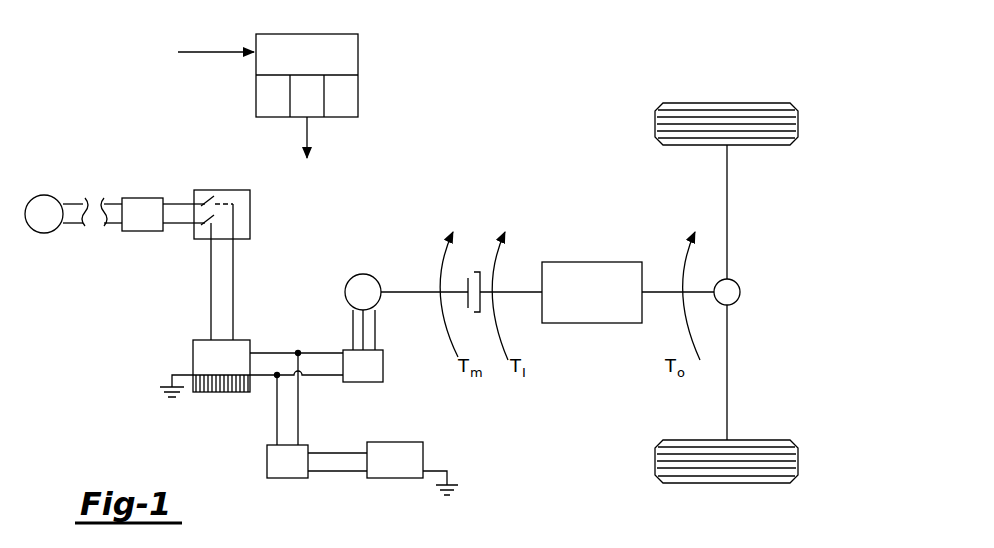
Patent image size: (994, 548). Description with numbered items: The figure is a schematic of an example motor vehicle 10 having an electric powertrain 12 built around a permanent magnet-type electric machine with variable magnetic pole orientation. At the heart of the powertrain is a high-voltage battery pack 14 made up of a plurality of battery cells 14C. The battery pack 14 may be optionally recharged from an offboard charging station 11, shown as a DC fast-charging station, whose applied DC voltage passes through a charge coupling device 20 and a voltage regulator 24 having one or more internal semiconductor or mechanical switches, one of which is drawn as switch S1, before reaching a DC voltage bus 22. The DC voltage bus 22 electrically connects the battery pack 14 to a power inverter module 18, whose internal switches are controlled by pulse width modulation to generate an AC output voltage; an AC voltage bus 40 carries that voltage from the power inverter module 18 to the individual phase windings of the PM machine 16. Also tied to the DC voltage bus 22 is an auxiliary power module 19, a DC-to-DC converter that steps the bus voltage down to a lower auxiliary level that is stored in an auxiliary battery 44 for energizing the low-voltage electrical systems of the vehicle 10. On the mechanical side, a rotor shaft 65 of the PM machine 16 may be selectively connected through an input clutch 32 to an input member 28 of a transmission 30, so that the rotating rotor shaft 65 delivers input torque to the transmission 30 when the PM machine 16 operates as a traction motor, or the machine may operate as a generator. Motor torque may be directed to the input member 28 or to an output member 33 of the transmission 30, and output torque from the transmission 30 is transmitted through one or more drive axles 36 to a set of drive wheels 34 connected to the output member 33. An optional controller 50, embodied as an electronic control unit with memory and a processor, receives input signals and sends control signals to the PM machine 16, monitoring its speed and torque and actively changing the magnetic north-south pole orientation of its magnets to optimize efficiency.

The motor vehicle 10 is at (810, 72).
The offboard charging station 11 is at (44, 195).
The electric powertrain 12 is at (422, 195).
The high-voltage battery pack 14 is at (250, 345).
The battery cells 14C is at (222, 395).
The PM machine 16 is at (363, 274).
The power inverter module 18 is at (383, 365).
The auxiliary power module 19 is at (283, 478).
The charge coupling device 20 is at (143, 198).
The DC voltage bus 22 is at (233, 290).
The voltage regulator 24 is at (222, 190).
The switch S1 is at (196, 188).
The input member 28 is at (521, 290).
The transmission 30 is at (591, 262).
The input clutch 32 is at (473, 260).
The output member 33 is at (659, 290).
The drive wheels 34 is at (655, 118).
The drive axles 36 is at (727, 232).
The AC voltage bus 40 is at (376, 330).
The auxiliary battery 44 is at (423, 450).
The controller 50 is at (358, 60).
The rotor shaft 65 is at (397, 290).